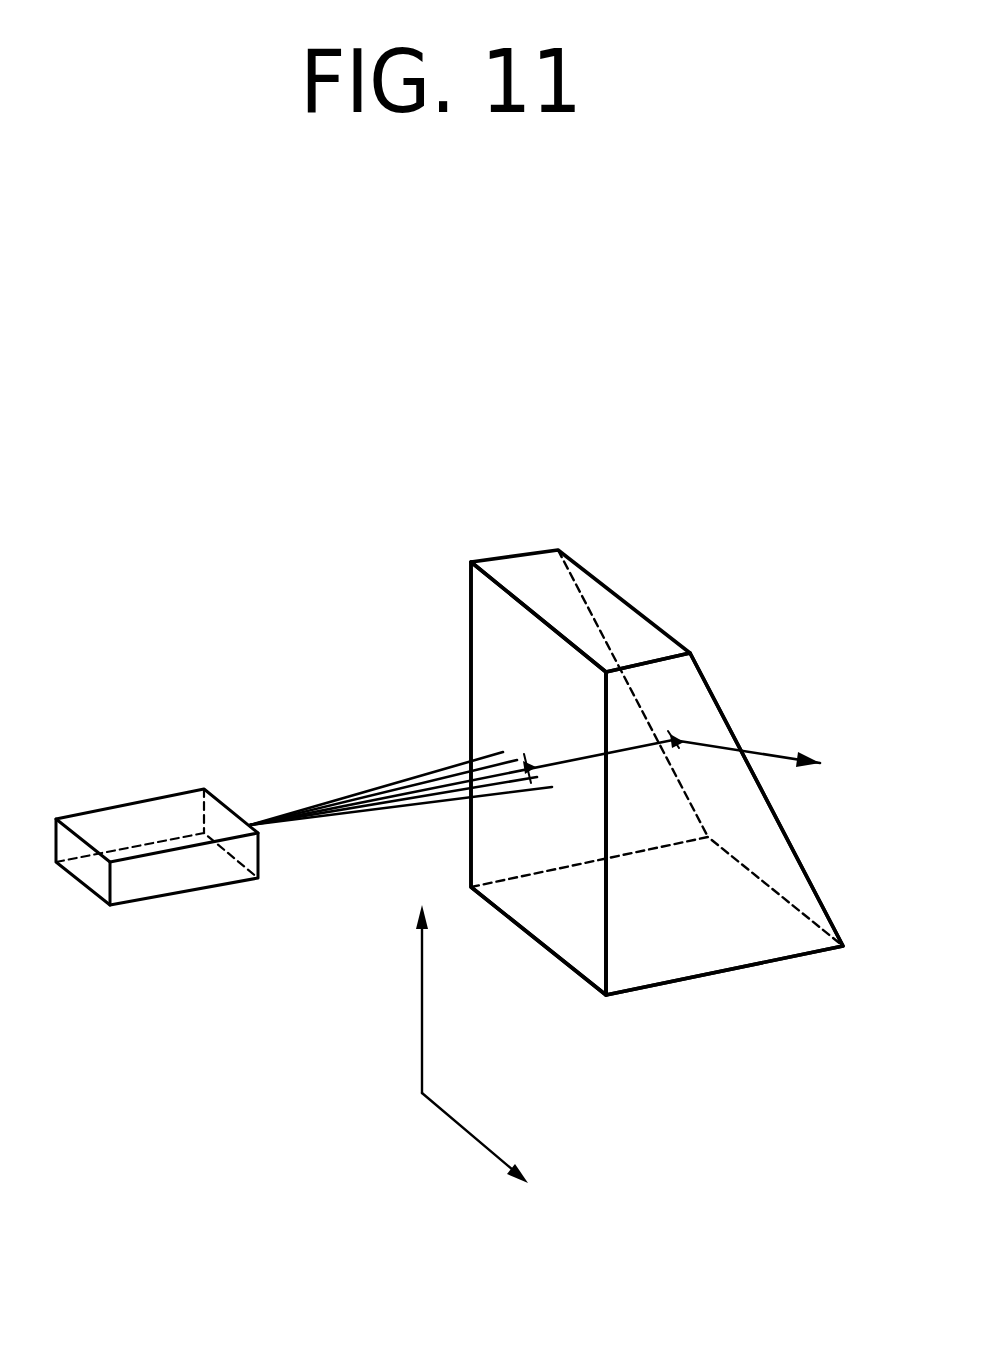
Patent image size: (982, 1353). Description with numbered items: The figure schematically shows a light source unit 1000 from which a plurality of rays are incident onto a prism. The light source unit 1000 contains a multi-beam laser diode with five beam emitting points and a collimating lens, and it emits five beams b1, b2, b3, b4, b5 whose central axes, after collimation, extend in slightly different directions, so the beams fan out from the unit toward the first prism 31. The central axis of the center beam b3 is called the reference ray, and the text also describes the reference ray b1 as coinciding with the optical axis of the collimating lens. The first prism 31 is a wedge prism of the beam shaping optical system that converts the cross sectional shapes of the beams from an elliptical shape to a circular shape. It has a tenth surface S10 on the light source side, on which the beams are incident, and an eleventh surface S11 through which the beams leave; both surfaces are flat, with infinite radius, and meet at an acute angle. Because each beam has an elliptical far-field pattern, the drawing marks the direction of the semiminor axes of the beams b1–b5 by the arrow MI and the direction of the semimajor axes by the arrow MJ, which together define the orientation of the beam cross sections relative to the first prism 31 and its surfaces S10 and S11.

The light source unit 1000 is at (170, 813).
The beam b1 is at (430, 767).
The beam b2 is at (430, 780).
The beam b3 is at (493, 767).
The beam b4 is at (425, 795).
The beam b5 is at (447, 790).
The first prism 31 is at (585, 821).
The tenth surface S10 is at (482, 617).
The eleventh surface S11 is at (638, 650).
The arrow MJ is at (449, 998).
The arrow MI is at (501, 1144).